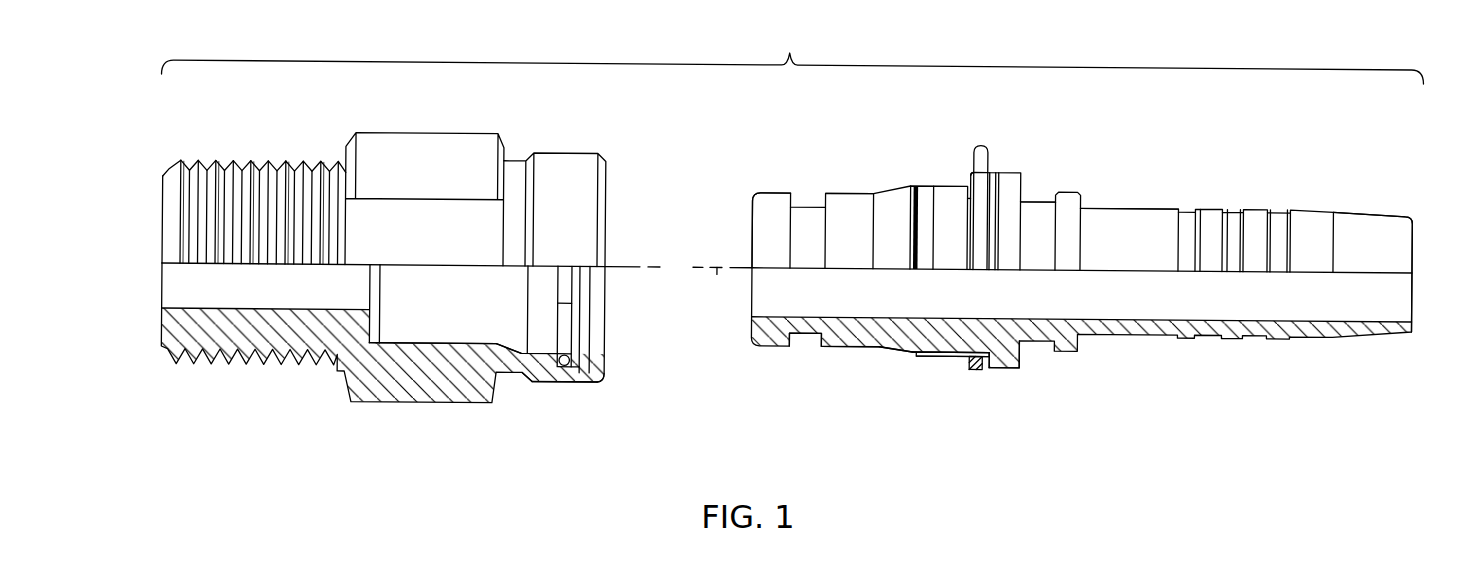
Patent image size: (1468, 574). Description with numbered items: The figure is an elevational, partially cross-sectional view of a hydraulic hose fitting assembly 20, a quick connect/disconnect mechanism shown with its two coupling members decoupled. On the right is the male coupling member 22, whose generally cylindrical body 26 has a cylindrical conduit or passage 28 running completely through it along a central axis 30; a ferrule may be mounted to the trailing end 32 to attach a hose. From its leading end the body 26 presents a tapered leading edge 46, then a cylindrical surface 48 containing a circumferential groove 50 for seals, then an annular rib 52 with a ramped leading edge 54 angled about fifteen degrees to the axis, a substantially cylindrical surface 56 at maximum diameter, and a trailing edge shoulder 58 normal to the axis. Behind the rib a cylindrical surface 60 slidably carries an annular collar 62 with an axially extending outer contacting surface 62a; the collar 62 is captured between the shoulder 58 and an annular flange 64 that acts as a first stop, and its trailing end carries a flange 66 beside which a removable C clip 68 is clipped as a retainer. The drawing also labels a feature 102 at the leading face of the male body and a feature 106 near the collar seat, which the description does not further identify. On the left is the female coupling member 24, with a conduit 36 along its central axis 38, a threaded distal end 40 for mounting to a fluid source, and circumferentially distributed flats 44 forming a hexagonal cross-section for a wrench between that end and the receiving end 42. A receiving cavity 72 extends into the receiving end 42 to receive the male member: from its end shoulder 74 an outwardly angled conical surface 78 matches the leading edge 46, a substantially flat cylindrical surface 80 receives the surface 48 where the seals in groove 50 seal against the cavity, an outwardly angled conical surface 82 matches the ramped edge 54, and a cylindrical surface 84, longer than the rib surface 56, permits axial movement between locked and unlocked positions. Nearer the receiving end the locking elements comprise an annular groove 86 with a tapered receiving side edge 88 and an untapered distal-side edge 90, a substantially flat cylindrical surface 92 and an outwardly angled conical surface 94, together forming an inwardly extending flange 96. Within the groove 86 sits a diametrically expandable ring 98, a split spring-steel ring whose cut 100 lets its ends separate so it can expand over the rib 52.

The hydraulic hose fitting assembly 20 is at (793, 49).
The male coupling member 22 is at (1128, 185).
The female coupling member 24 is at (316, 150).
The generally cylindrical body 26 is at (1043, 194).
The cylindrical conduit or passage 28 is at (1186, 318).
The central axis 30 is at (717, 278).
The trailing end 32 is at (1416, 224).
The conduit 36 is at (265, 308).
The central axis 38 is at (618, 250).
The distal end 40 is at (204, 374).
The receiving end 42 is at (604, 374).
The flats 44 is at (415, 131).
The tapered leading edge 46 is at (756, 190).
The cylindrical surface 48 is at (834, 188).
The circumferential groove 50 is at (805, 341).
The annular rib 52 is at (900, 176).
The ramped leading edge 54 is at (872, 343).
The substantially cylindrical surface 56 is at (906, 354).
The trailing edge shoulder 58 is at (917, 352).
The cylindrical surface 60 is at (960, 348).
The annular collar 62 is at (951, 356).
The outer contacting surface 62a is at (943, 352).
The annular flange 64 is at (1022, 360).
The flange 66 is at (980, 366).
The removable C clip 68 is at (977, 182).
The receiving cavity 72 is at (455, 312).
The end shoulder 74 is at (381, 312).
The outwardly angled conical surface 78 is at (384, 341).
The substantially flat cylindrical surface 80 is at (414, 340).
The outwardly angled conical surface 82 is at (506, 347).
The cylindrical surface 84 is at (533, 342).
The annular groove 86 is at (553, 368).
The tapered receiving side edge 88 is at (572, 351).
The distal-side edge 90 is at (565, 268).
The substantially flat cylindrical surface 92 is at (588, 346).
The outwardly angled conical surface 94 is at (607, 361).
The inwardly extending flange 96 is at (588, 364).
The diametrically expandable ring 98 is at (573, 380).
The cut 100 is at (575, 301).
The end face 102 is at (751, 244).
The bottom wall 106 is at (917, 347).